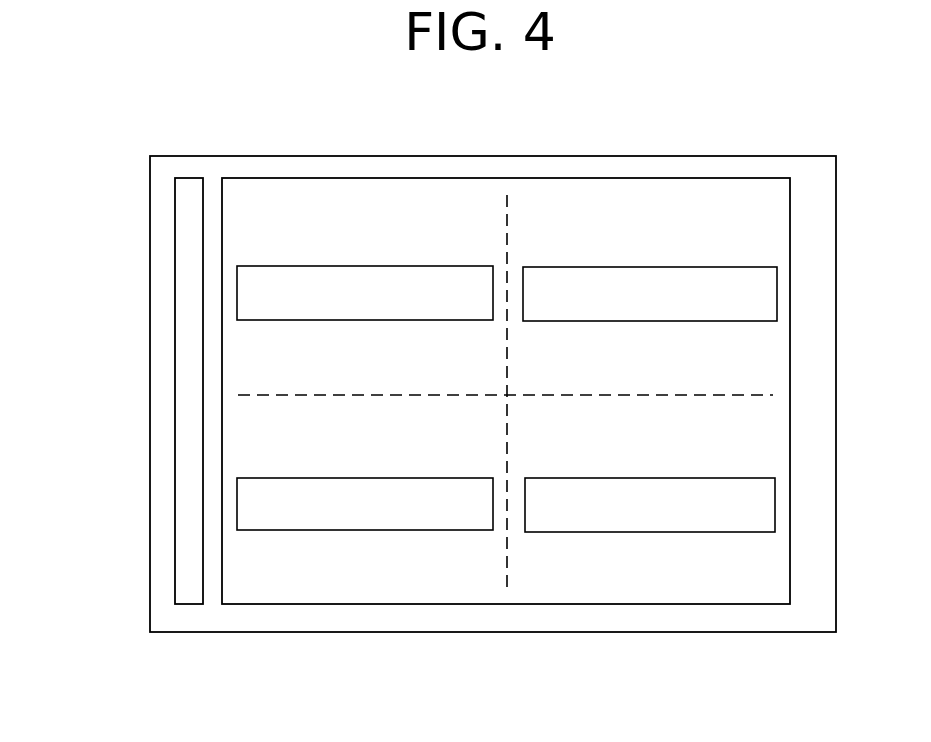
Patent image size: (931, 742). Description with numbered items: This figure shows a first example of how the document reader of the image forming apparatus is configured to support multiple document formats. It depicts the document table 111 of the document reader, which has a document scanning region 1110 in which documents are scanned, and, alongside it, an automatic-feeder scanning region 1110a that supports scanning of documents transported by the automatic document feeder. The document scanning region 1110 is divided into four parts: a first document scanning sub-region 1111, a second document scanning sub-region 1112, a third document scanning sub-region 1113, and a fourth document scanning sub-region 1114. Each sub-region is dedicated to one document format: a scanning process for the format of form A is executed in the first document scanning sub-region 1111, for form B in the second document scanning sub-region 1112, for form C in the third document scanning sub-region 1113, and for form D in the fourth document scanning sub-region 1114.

The document table 111 is at (555, 165).
The document scanning region 1110 is at (461, 178).
The automatic-feeder scanning region 1110a is at (190, 346).
The first document scanning sub-region 1111 is at (352, 222).
The second document scanning sub-region 1112 is at (647, 220).
The third document scanning sub-region 1113 is at (363, 568).
The fourth document scanning sub-region 1114 is at (632, 562).